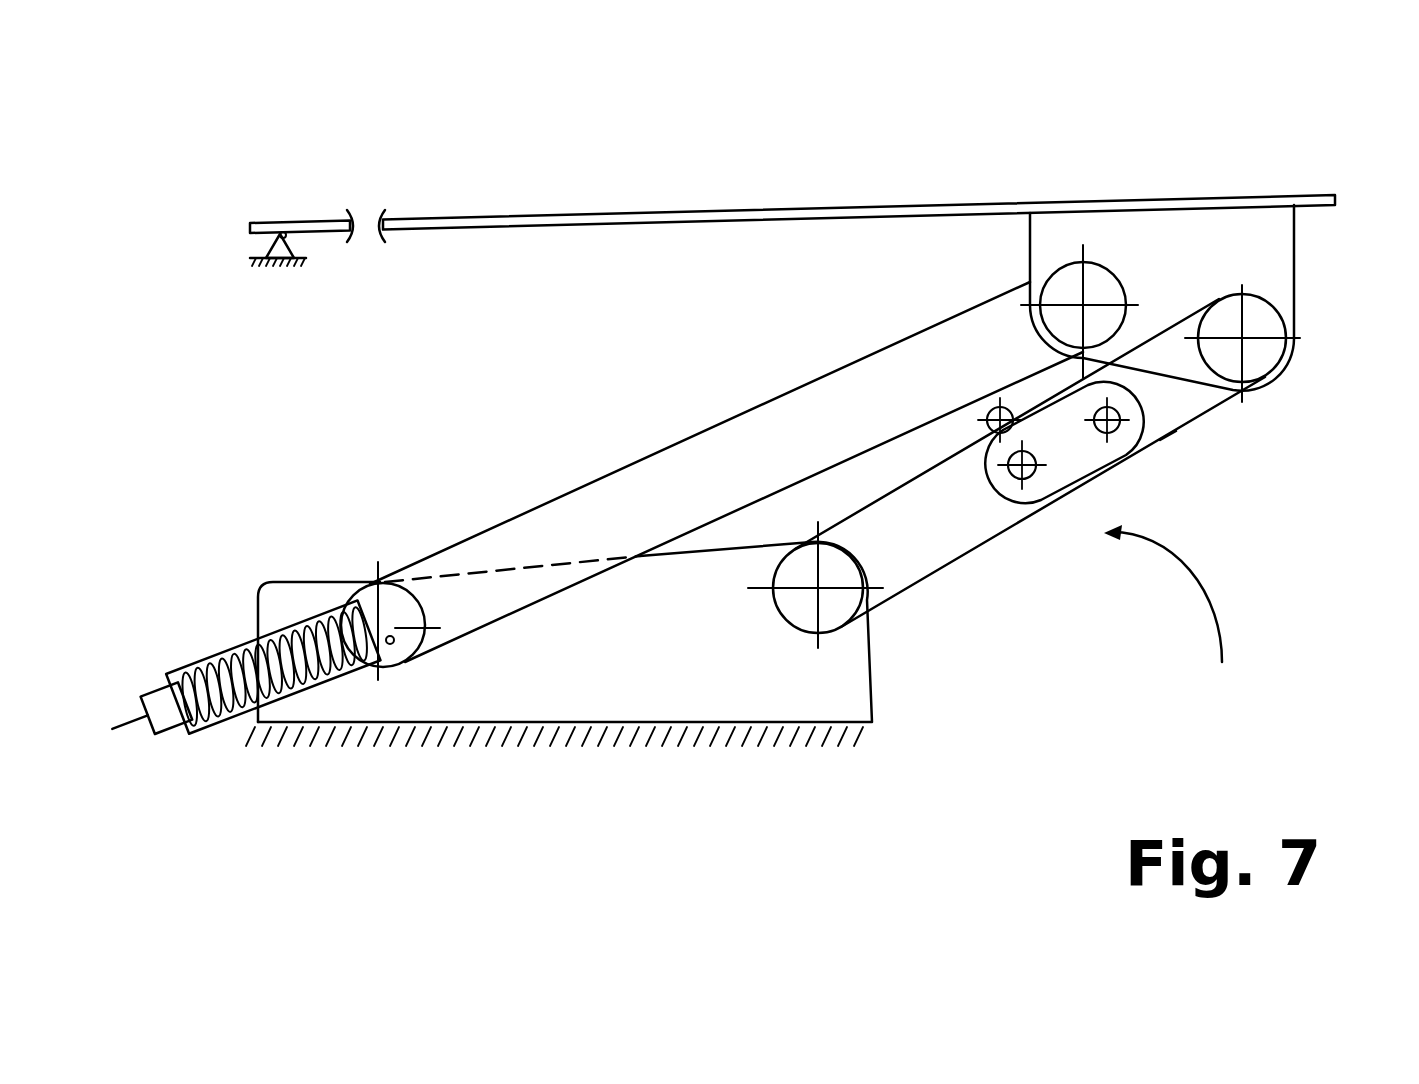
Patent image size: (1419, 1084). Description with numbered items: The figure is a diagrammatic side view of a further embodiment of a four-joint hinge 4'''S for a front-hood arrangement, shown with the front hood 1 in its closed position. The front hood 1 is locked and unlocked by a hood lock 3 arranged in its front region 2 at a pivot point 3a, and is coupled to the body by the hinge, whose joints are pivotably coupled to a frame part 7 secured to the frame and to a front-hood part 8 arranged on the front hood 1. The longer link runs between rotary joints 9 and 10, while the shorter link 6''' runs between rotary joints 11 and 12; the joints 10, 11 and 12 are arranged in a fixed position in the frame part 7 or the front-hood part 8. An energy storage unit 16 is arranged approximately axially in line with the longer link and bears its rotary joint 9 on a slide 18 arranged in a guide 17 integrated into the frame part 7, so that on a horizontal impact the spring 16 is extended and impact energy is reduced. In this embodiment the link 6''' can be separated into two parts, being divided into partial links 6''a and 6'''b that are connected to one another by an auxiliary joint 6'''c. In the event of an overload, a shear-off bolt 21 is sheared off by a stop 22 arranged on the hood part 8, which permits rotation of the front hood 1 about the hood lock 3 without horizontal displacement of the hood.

The front hood 1 is at (572, 221).
The front region 2 is at (315, 221).
The hood lock 3 is at (280, 259).
The pivot axis 3a is at (305, 237).
The frame part 7 is at (612, 655).
The front-hood part 8 is at (1180, 271).
The rotary joint 9 is at (416, 656).
The rotary joint 10 is at (1095, 290).
The rotary joint 11 is at (795, 627).
The rotary joint 12 is at (1255, 310).
The energy storage unit 16 is at (205, 657).
The guide 17 is at (194, 736).
The slide 18 is at (396, 650).
The shear-off bolt 21 is at (1122, 429).
The stop 22 is at (988, 416).
The link 6''' is at (1064, 503).
The partial link 6'''b is at (1288, 397).
The auxiliary joint 6'''c is at (1128, 496).
The partial link 6''a is at (1030, 501).
The four-joint hinge in closed position 4'''S is at (1195, 620).